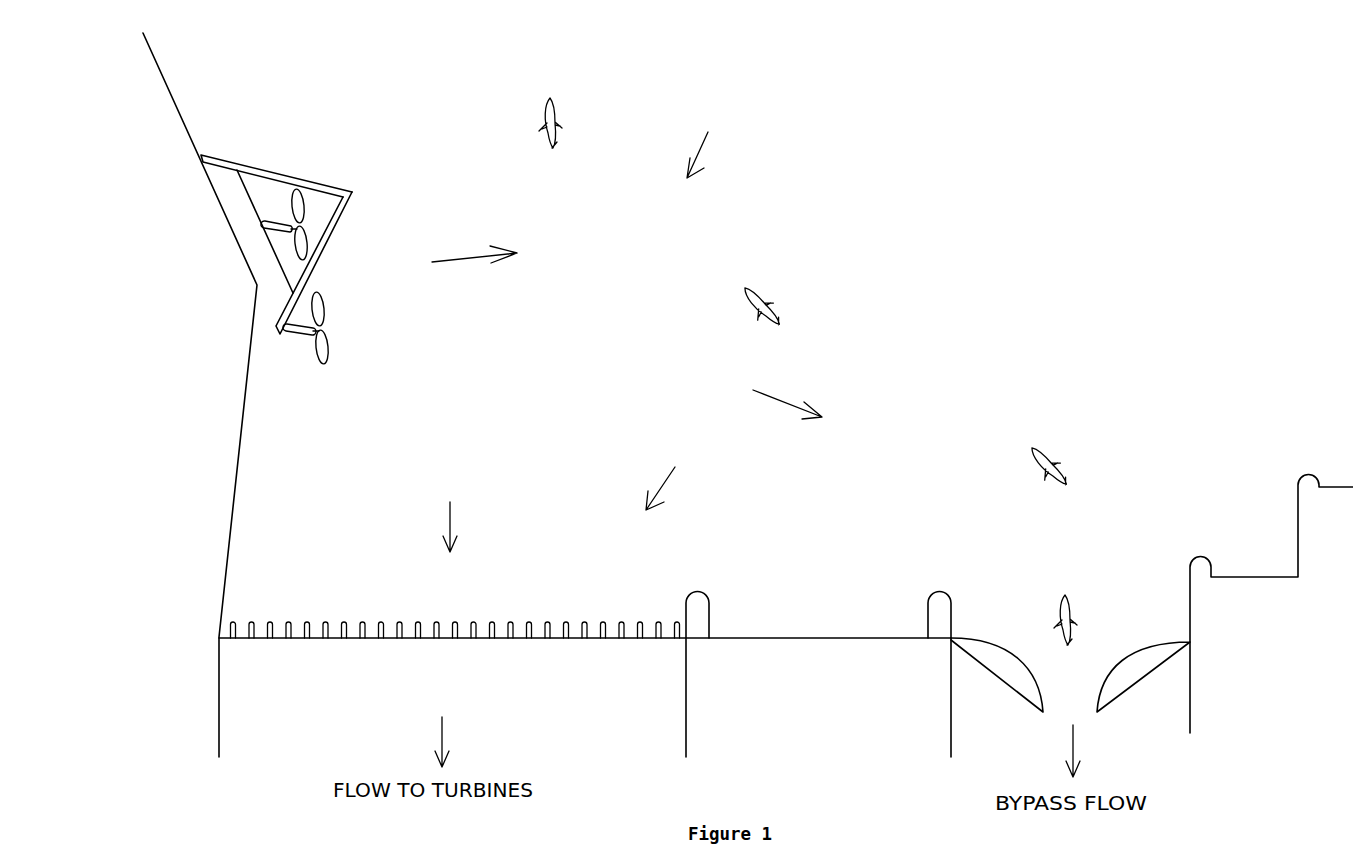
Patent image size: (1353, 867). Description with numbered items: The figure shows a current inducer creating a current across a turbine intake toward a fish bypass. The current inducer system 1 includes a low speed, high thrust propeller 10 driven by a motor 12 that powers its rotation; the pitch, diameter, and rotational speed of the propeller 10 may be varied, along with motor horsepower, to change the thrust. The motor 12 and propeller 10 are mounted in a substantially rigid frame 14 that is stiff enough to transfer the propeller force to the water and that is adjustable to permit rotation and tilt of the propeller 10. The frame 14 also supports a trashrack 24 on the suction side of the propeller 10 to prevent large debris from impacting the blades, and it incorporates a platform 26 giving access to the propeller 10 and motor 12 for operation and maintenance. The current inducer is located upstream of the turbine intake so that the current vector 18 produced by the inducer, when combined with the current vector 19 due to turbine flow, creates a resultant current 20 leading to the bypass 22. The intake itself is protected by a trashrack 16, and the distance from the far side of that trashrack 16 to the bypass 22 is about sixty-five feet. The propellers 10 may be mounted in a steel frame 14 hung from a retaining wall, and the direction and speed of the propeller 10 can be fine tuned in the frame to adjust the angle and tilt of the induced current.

The current inducer system 1 is at (345, 315).
The propeller 10 is at (300, 203).
The motor 12 is at (267, 227).
The frame 14 is at (345, 204).
The trashrack 16 is at (378, 643).
The current vector 18 is at (478, 264).
The current vector due to turbine flow 19 is at (711, 151).
The current 20 is at (782, 410).
The bypass 22 is at (1068, 698).
The trashrack 24 is at (288, 173).
The platform 26 is at (260, 262).